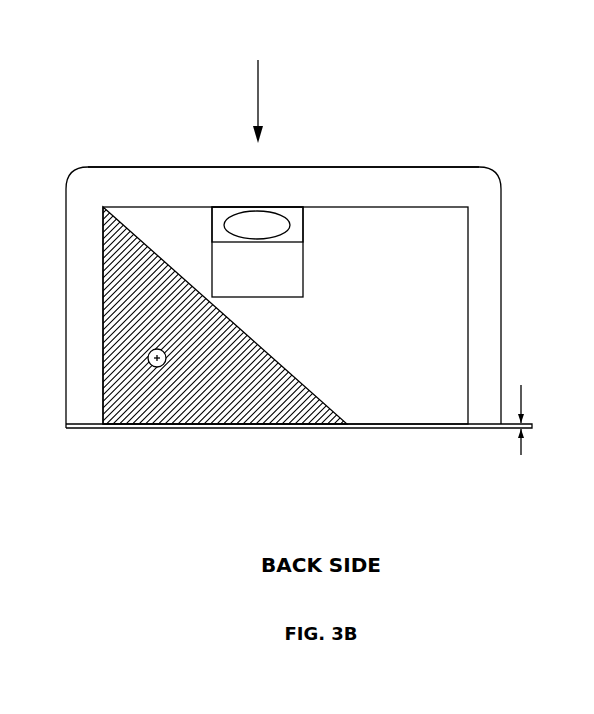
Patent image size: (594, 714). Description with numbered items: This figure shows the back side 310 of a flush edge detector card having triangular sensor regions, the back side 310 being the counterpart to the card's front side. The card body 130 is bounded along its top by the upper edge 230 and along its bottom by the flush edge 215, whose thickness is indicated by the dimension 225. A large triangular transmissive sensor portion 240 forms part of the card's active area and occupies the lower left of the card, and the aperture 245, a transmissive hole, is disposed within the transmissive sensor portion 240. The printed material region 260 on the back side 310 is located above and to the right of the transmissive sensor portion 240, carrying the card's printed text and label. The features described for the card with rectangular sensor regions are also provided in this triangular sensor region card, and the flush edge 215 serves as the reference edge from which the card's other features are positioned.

The back side 310 is at (257, 84).
The housing 130 is at (483, 188).
The top cover edge 230 is at (400, 166).
The flush edge 215 is at (400, 425).
The base plate thickness 225 is at (532, 423).
The printed material region 260 is at (458, 247).
The transmissive sensor portion 240 is at (129, 404).
The aperture 245 is at (157, 367).